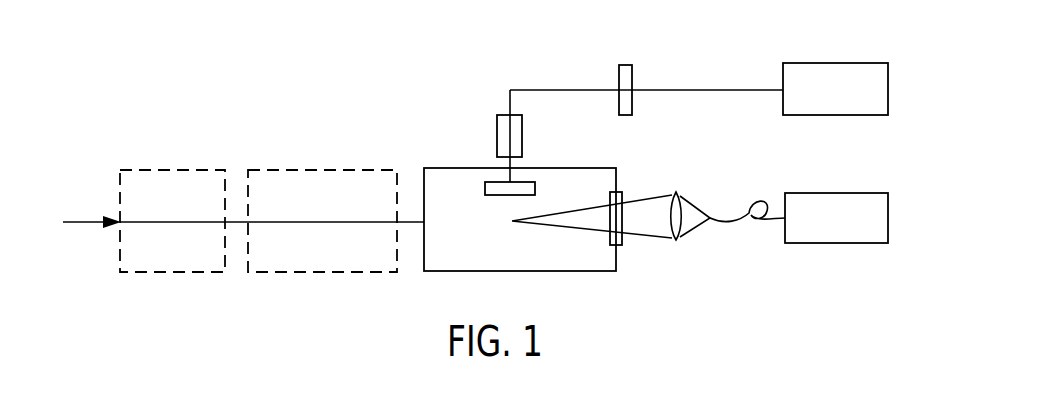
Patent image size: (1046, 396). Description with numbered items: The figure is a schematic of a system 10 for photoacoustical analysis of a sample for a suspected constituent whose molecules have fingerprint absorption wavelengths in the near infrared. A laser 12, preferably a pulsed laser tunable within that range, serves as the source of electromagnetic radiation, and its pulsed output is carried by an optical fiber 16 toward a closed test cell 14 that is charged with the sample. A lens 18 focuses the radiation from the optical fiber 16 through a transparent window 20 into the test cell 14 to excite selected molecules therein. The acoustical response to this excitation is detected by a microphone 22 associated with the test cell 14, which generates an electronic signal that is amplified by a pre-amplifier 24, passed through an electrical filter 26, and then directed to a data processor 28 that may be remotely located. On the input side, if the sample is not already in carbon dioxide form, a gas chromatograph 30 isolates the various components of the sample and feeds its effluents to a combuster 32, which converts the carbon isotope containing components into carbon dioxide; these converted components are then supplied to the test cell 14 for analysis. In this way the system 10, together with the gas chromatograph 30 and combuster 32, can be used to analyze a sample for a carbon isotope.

The system 10 is at (487, 86).
The laser 12 is at (836, 218).
The test cell 14 is at (600, 168).
The optical fiber 16 is at (760, 198).
The lens 18 is at (677, 192).
The transparent window 20 is at (620, 192).
The microphone 22 is at (487, 181).
The pre-amplifier 24 is at (522, 127).
The electrical filter 26 is at (633, 62).
The data processor 28 is at (815, 63).
The gas chromatograph 30 is at (175, 169).
The combuster 32 is at (312, 169).